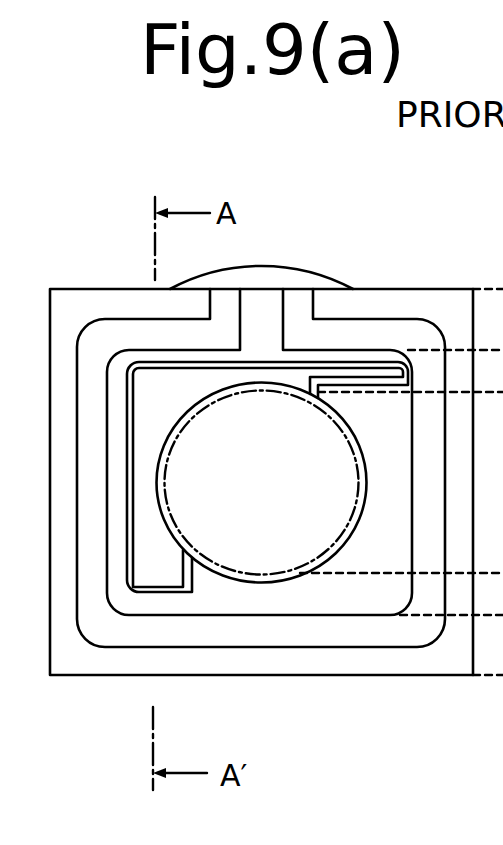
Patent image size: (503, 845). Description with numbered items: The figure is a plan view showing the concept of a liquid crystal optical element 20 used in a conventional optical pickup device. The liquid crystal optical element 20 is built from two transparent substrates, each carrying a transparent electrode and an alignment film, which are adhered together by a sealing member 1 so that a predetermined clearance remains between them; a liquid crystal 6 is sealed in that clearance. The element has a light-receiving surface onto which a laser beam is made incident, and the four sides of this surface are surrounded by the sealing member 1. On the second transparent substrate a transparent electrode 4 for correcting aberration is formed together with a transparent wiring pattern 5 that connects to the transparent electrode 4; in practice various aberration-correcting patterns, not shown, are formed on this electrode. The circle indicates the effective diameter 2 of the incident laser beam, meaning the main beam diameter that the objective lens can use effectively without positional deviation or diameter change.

The liquid crystal optical element 20 is at (64, 231).
The sealing member 1 is at (360, 333).
The effective diameter 2 is at (243, 392).
The transparent electrode 4 is at (229, 465).
The transparent wiring pattern 5 is at (380, 376).
The liquid crystal 6 is at (323, 597).